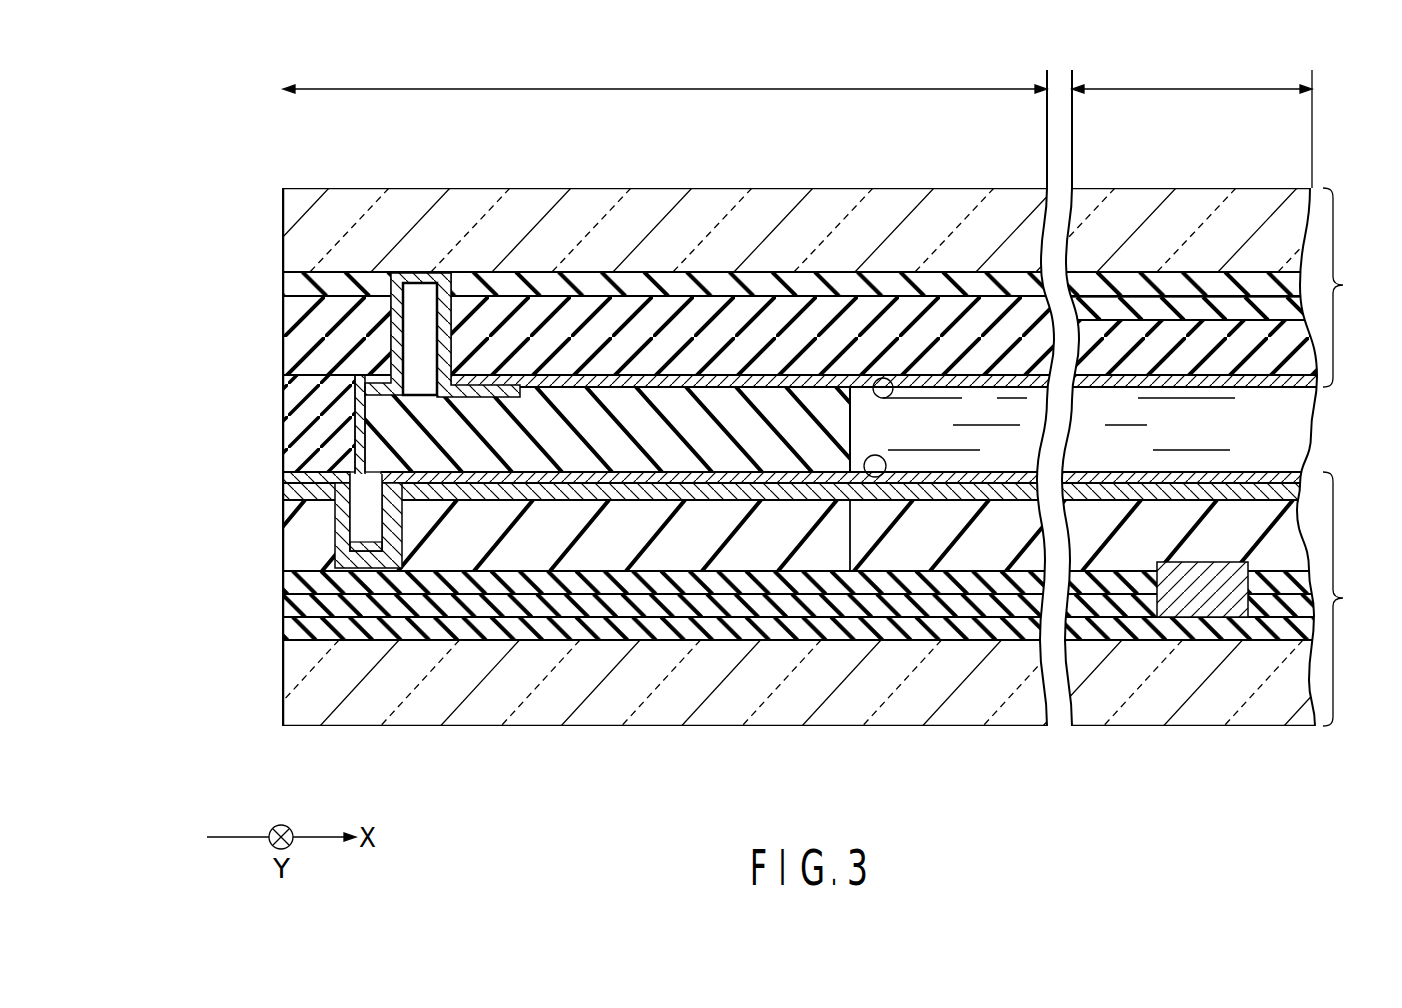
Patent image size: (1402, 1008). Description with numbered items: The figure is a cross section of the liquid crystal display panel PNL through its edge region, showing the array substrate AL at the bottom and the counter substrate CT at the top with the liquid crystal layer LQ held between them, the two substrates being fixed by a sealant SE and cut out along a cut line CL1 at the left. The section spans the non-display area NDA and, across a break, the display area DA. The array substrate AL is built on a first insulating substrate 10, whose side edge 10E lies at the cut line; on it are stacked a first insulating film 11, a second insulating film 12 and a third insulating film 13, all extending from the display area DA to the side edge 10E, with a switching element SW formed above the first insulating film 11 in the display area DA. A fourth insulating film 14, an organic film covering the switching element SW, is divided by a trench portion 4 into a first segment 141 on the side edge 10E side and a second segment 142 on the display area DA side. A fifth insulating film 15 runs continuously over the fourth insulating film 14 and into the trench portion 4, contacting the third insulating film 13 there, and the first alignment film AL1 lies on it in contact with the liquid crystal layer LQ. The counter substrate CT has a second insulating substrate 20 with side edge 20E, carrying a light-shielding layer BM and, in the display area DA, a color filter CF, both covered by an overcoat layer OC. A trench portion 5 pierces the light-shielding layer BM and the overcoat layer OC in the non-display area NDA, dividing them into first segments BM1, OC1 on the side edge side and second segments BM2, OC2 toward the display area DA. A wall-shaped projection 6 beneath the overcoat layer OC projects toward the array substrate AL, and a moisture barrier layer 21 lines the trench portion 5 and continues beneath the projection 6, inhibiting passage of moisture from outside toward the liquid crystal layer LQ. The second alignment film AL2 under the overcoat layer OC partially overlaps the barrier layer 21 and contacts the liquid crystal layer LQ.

The liquid crystal display panel PNL is at (692, 738).
The second insulating substrate 20 is at (283, 247).
The end portion of second substrate 20E is at (273, 207).
The first insulating substrate 10 is at (283, 695).
The side edge 10E is at (273, 662).
The light-shielding layer BM is at (744, 215).
The first segment BM1 is at (283, 293).
The second segment BM2 is at (540, 286).
The overcoat layer OC is at (744, 252).
The first segment OC1 is at (283, 353).
The second segment OC2 is at (705, 320).
The color filter CF is at (1196, 308).
The second alignment film AL2 is at (900, 380).
The first alignment film AL1 is at (875, 483).
The projection 6 is at (283, 428).
The trench portion 5 is at (440, 325).
The barrier layer 21 is at (283, 477).
The liquid crystal layer LQ is at (1283, 437).
The fourth insulating film 14 is at (751, 645).
The first segment 141 is at (283, 542).
The second segment 142 is at (968, 540).
The fifth insulating film 15 is at (283, 497).
The trench portion 4 is at (350, 540).
The third insulating film 13 is at (283, 585).
The second insulating film 12 is at (283, 609).
The first insulating film 11 is at (283, 633).
The switching element SW is at (1192, 606).
The sealant SE is at (620, 450).
The cut line CL1 is at (283, 178).
The non-display area NDA is at (661, 89).
The display area DA is at (1183, 89).
The counter substrate CT is at (1351, 287).
The array substrate AL is at (1352, 599).